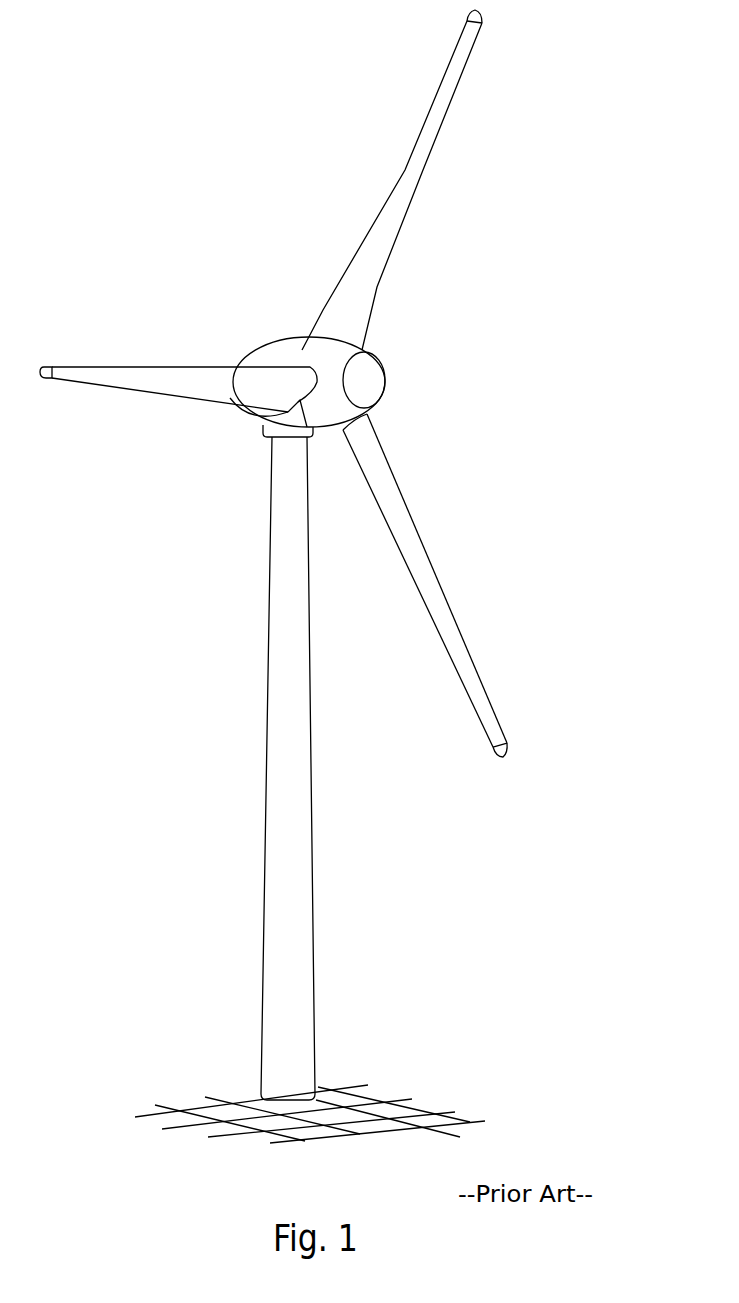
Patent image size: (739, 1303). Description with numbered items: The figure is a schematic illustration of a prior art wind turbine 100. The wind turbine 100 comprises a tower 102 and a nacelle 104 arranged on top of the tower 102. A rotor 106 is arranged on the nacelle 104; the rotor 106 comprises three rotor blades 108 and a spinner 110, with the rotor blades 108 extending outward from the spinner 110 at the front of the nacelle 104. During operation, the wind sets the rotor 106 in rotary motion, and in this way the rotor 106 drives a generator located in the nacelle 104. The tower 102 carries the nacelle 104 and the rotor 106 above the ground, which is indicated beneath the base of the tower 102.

The wind turbine 100 is at (227, 505).
The tower 102 is at (295, 872).
The nacelle 104 is at (284, 356).
The rotor 106 is at (452, 302).
The rotor blade 108 is at (428, 135).
The spinner 110 is at (368, 380).